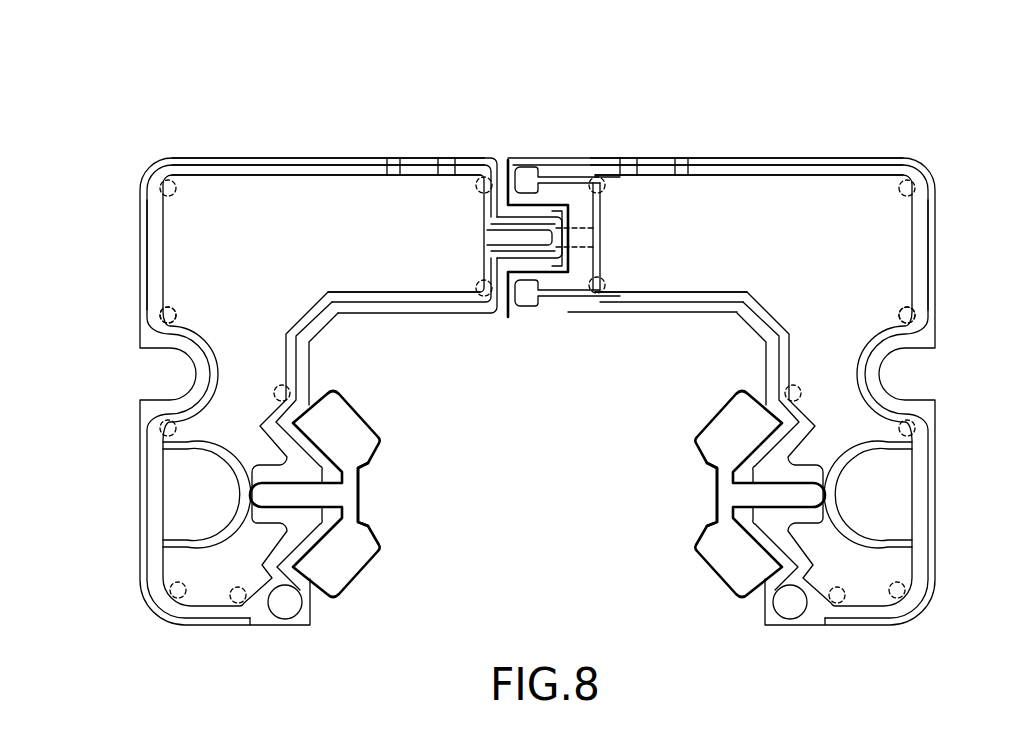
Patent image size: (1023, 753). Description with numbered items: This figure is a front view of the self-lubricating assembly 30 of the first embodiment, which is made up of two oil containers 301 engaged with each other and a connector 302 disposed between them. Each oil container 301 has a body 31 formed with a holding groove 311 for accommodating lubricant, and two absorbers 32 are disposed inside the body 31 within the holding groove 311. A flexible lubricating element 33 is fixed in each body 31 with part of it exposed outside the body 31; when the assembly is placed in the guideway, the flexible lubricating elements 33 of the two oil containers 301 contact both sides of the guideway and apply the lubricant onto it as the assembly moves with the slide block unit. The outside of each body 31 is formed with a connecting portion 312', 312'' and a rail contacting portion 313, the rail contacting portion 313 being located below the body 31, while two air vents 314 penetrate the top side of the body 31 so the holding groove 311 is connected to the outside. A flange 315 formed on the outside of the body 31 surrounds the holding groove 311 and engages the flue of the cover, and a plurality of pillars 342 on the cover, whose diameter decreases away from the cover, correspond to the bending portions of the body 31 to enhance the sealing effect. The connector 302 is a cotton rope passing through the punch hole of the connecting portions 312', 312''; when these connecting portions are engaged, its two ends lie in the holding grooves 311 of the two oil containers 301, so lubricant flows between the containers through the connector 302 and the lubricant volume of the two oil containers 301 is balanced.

The self-lubricating assembly 30 is at (182, 59).
The body 31 is at (238, 160).
The oil container 301 is at (290, 150).
The connector 302 is at (527, 242).
The holding groove 311 is at (165, 250).
The connecting portion 312' is at (564, 206).
The connecting portion 312'' is at (567, 331).
The rail contacting portion 313 is at (374, 495).
The air vent 314 is at (448, 158).
The flange 315 is at (338, 170).
The absorber 32 is at (390, 270).
The flexible lubricating element 33 is at (345, 428).
The pillar 342 is at (172, 315).